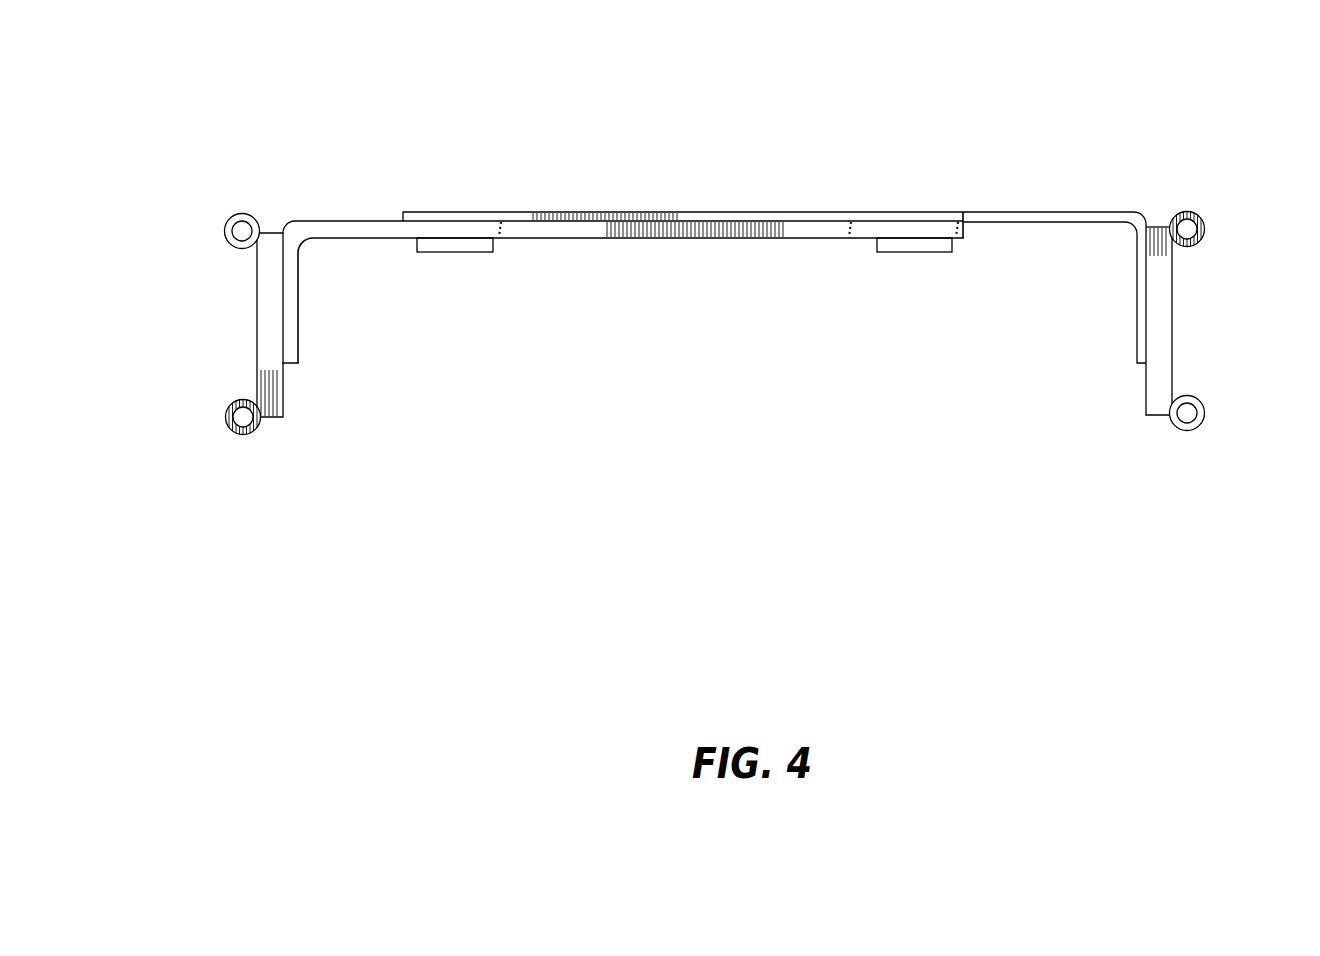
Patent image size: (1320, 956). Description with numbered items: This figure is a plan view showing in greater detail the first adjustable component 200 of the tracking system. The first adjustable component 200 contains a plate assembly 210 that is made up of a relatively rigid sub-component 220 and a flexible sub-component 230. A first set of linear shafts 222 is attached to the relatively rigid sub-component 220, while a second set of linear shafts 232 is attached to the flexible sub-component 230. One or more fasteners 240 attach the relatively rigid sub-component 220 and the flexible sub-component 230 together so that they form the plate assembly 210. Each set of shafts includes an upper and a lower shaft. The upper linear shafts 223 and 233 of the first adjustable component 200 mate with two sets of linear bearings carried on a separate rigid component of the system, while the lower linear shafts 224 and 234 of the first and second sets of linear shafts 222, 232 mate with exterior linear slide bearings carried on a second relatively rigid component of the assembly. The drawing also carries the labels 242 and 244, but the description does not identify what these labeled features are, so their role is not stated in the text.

The first adjustable component 200 is at (858, 162).
The plate assembly 210 is at (923, 194).
The relatively rigid sub-component 220 is at (348, 233).
The first set of linear shafts 222 is at (268, 305).
The upper linear shaft 223 is at (227, 223).
The lower linear shaft 224 is at (257, 430).
The flexible sub-component 230 is at (1040, 215).
The second set of linear shafts 232 is at (1175, 293).
The upper linear shaft 233 is at (1200, 220).
The lower linear shaft 234 is at (1202, 423).
The fasteners 240 is at (455, 245).
The top strip 242 is at (473, 228).
The flange portion 244 is at (1137, 218).